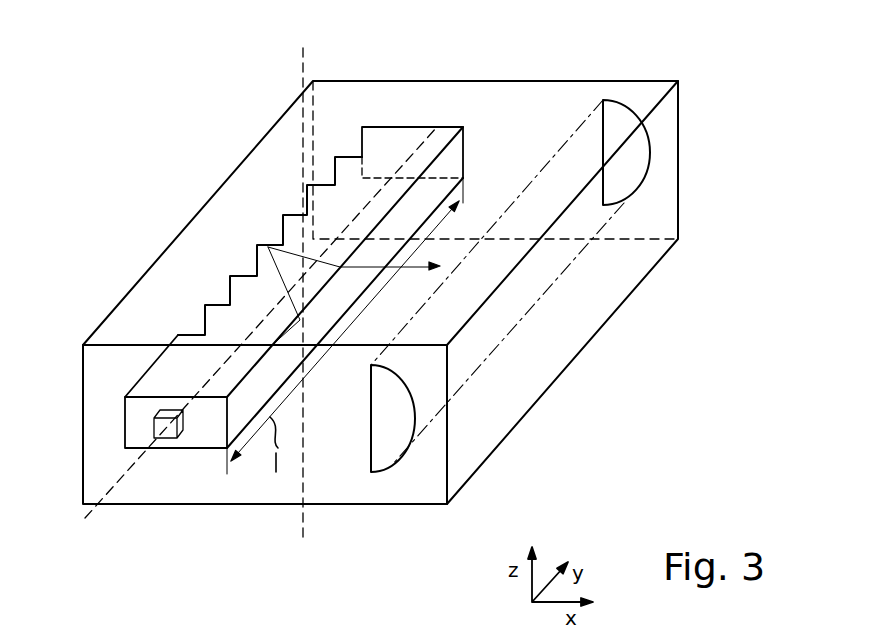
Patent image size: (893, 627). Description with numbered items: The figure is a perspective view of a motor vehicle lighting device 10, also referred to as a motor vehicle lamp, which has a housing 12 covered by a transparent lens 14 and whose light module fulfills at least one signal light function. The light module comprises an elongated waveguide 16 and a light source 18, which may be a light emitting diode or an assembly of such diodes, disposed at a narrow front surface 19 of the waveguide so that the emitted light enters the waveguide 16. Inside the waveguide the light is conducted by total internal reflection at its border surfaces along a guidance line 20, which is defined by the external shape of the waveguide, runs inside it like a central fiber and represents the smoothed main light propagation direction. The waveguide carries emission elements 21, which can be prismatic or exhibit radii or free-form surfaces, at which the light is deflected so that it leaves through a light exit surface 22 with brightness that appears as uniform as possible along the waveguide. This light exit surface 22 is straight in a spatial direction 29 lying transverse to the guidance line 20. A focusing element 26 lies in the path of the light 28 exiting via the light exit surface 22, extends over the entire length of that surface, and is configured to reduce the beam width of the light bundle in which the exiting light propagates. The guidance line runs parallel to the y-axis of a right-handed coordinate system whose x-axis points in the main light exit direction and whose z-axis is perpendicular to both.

The motor vehicle lighting device 10 is at (117, 133).
The housing 12 is at (368, 81).
The transparent lens 14 is at (492, 430).
The waveguide 16 is at (428, 117).
The light source 18 is at (170, 440).
The narrow front surface 19 is at (203, 437).
The guidance line 20 is at (403, 158).
The emission elements 21 is at (240, 273).
The light exit surface 22 is at (463, 168).
The focusing element 26 is at (393, 426).
The light 28 is at (420, 268).
The spatial direction 29 is at (302, 70).